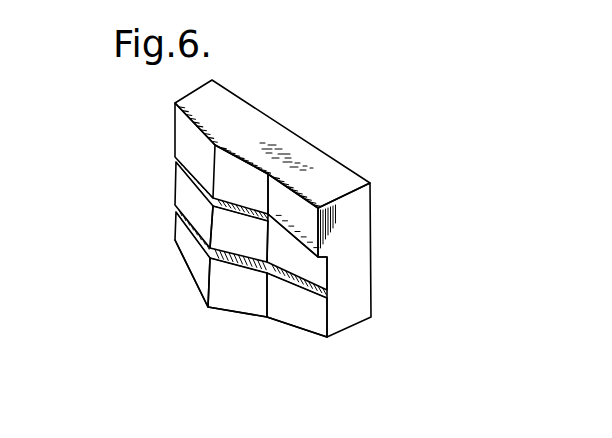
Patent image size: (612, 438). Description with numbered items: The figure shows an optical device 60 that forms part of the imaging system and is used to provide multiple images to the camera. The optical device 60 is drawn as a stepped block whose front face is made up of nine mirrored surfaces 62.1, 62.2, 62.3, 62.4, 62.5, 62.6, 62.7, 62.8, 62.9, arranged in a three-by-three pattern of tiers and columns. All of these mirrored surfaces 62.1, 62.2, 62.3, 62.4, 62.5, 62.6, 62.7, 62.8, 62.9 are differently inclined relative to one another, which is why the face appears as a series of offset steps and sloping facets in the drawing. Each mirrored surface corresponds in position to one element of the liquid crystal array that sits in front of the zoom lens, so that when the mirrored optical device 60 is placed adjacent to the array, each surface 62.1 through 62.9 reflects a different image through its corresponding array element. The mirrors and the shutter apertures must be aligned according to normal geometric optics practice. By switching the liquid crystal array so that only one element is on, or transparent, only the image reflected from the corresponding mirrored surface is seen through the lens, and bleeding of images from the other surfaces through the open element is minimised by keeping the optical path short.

The optical device 60 is at (333, 148).
The mirrored surface 62.1 is at (183, 132).
The mirrored surface 62.2 is at (250, 170).
The mirrored surface 62.3 is at (307, 227).
The mirrored surface 62.4 is at (183, 189).
The mirrored surface 62.5 is at (223, 229).
The mirrored surface 62.6 is at (322, 277).
The mirrored surface 62.7 is at (193, 258).
The mirrored surface 62.8 is at (223, 297).
The mirrored surface 62.9 is at (310, 315).